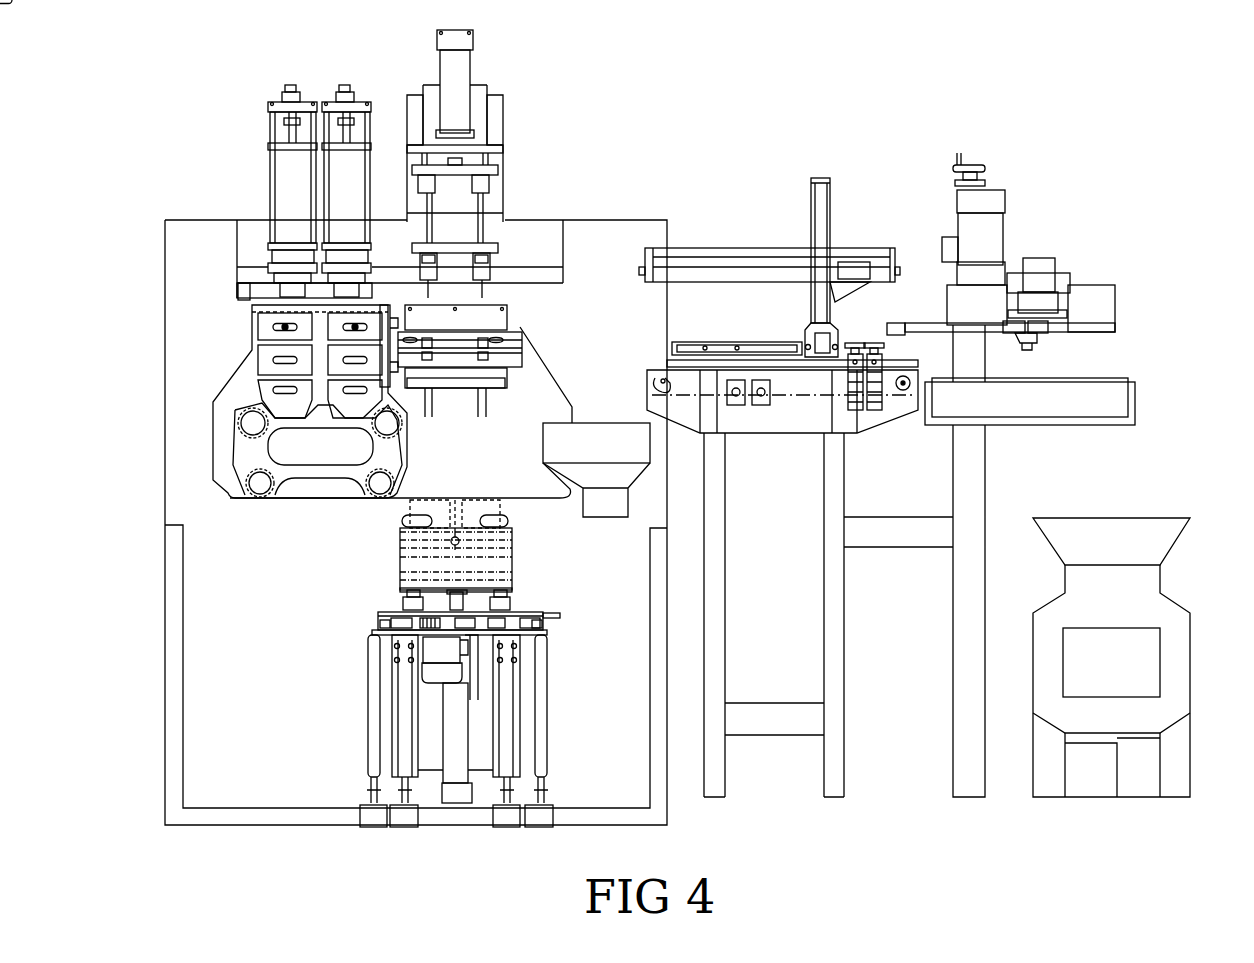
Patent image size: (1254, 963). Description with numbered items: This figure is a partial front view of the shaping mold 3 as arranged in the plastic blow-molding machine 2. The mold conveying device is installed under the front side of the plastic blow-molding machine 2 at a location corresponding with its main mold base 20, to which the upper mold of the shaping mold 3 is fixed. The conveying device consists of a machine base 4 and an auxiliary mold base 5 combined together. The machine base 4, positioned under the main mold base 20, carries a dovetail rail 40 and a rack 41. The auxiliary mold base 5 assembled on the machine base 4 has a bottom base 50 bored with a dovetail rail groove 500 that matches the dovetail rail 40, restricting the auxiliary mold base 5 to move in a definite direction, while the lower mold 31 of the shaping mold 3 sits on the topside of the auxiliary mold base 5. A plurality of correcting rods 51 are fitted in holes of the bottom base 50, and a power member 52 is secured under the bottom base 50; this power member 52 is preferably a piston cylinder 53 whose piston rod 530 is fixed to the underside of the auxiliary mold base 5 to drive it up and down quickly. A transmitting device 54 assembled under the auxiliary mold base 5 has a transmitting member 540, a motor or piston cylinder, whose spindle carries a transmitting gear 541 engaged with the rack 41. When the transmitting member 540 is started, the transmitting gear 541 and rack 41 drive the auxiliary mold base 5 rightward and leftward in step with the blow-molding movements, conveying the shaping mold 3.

The plastic blow-molding machine 2 is at (268, 220).
The shaping mold 3 is at (238, 295).
The main mold base 20 is at (255, 382).
The lower mold 31 is at (475, 507).
The auxiliary mold base 5 is at (433, 580).
The piston rod 530 is at (467, 587).
The transmitting gear 541 is at (417, 610).
The rack 41 is at (405, 613).
The correcting rod 51 is at (498, 622).
The bottom base 50 is at (522, 617).
The dovetail rail groove 500 is at (378, 622).
The dovetail rail 40 is at (377, 630).
The machine base 4 is at (480, 648).
The transmitting device 54 is at (413, 668).
The transmitting member 540 is at (437, 673).
The piston cylinder 53 is at (453, 733).
The power member 52 is at (463, 790).